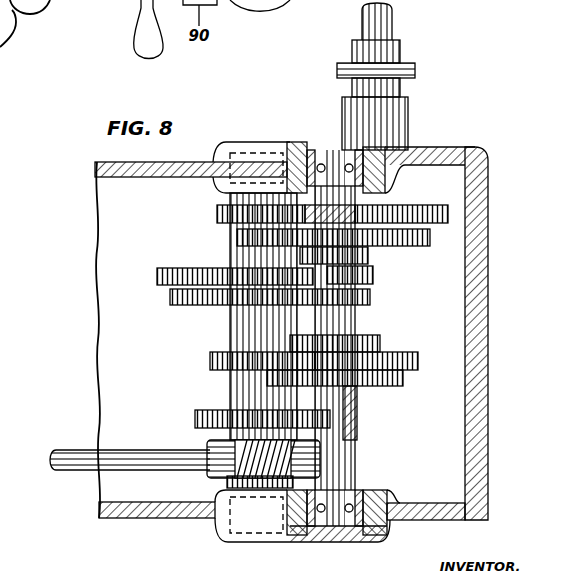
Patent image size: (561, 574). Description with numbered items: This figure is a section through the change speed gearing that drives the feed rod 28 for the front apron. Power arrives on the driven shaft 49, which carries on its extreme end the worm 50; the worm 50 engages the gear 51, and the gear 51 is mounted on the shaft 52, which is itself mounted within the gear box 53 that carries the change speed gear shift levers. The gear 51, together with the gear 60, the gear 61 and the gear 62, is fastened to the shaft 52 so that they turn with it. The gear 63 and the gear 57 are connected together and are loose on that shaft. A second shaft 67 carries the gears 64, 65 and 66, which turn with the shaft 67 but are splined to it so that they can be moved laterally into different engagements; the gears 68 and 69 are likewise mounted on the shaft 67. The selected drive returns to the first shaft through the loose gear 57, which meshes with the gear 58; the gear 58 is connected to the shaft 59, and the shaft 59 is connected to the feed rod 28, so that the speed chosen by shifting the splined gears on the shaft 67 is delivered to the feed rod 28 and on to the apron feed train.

The feed rod 28 is at (392, 25).
The driven shaft 49 is at (80, 450).
The worm 50 is at (223, 485).
The gear 51 is at (212, 440).
The shaft 52 is at (230, 322).
The gear box 53 is at (97, 212).
The gear 57 is at (217, 211).
The gear 58 is at (448, 212).
The shaft 59 is at (392, 254).
The gear 60 is at (195, 415).
The gear 61 is at (210, 359).
The gear 62 is at (170, 297).
The gear 63 is at (157, 276).
The gear 64 is at (403, 380).
The gear 65 is at (418, 359).
The gear 66 is at (383, 337).
The shaft 67 is at (357, 409).
The gear 68 is at (372, 264).
The gear 69 is at (432, 237).